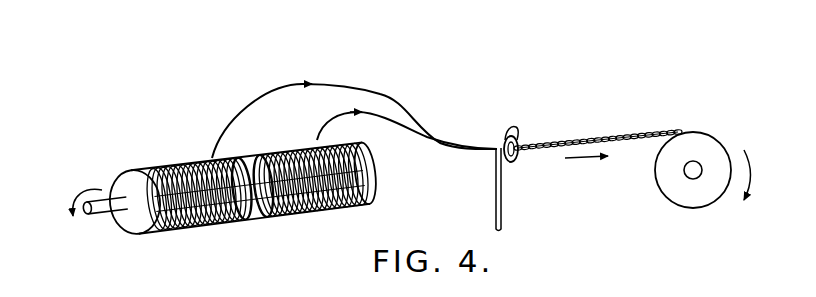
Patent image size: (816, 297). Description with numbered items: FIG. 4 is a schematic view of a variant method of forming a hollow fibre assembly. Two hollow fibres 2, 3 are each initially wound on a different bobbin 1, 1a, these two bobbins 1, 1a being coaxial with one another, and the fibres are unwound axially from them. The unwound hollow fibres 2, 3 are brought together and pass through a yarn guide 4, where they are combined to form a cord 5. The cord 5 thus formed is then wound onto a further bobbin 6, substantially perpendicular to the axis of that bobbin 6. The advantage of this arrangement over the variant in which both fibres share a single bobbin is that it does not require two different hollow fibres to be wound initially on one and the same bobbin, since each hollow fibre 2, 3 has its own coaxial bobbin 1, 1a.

The bobbin 1 is at (298, 213).
The bobbin 1a is at (167, 161).
The hollow fibre 2 is at (244, 108).
The hollow fibre 3 is at (423, 137).
The yarn guide 4 is at (494, 187).
The cord 5 is at (554, 142).
The bobbin 6 is at (653, 178).